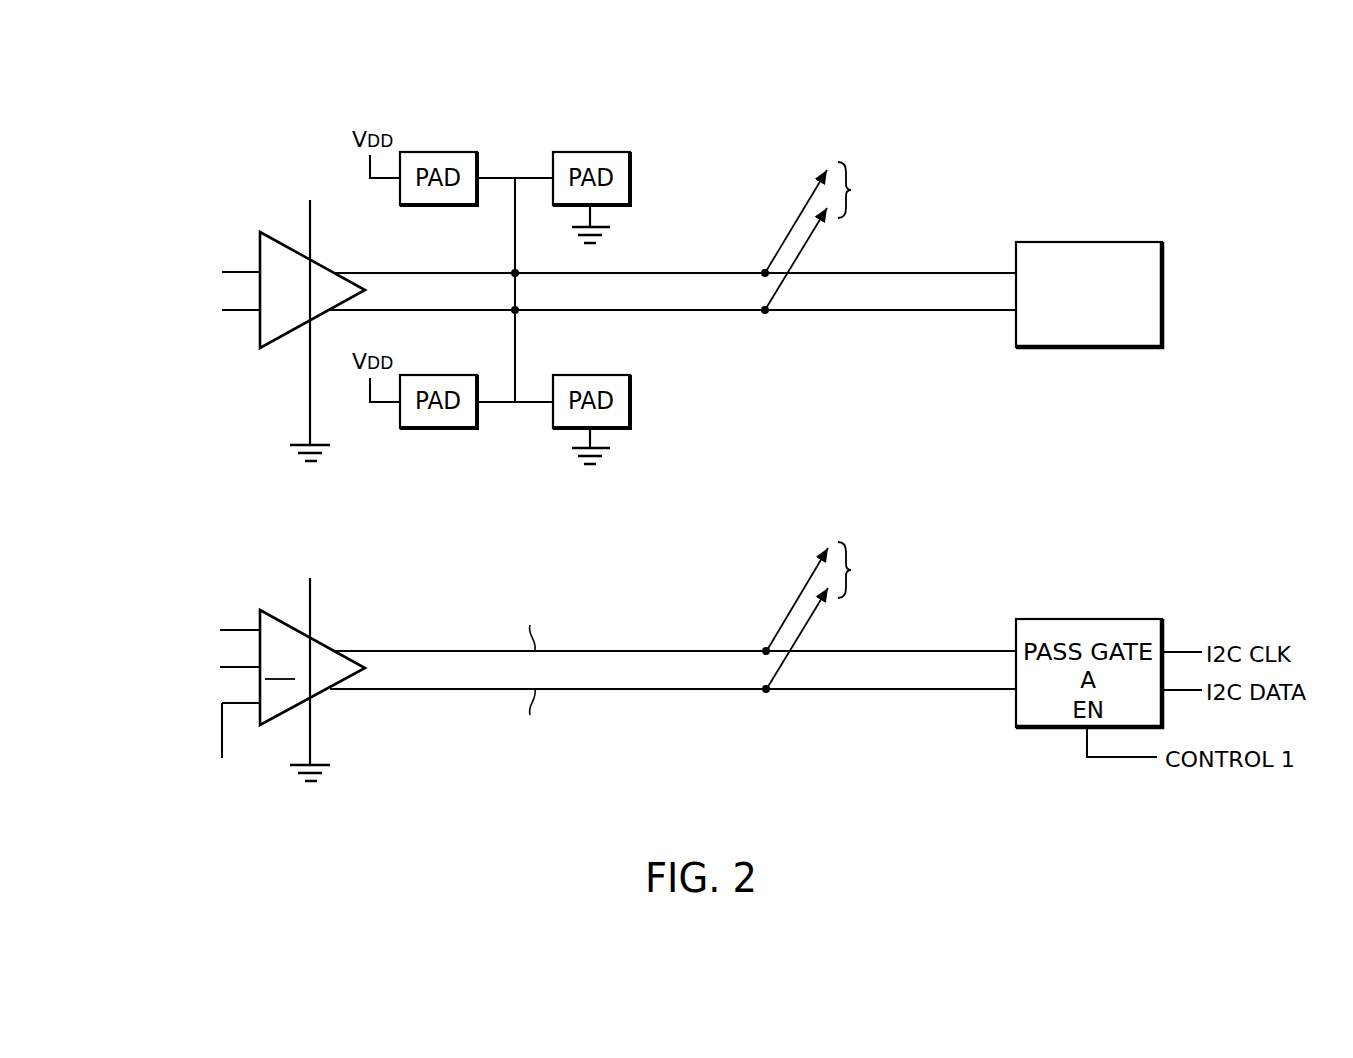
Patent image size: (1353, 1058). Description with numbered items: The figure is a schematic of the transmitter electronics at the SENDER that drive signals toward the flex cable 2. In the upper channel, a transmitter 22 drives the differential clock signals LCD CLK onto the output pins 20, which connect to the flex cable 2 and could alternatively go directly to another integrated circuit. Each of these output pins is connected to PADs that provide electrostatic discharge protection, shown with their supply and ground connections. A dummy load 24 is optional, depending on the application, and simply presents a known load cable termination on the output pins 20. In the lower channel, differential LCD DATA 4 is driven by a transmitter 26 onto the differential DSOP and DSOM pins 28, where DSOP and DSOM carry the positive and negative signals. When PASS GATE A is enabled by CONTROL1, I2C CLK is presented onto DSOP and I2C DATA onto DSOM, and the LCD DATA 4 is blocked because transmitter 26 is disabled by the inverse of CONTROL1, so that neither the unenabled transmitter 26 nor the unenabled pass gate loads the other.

The flex cable 2 is at (878, 419).
The LCD DATA 4 is at (181, 622).
The output pins 20 is at (797, 221).
The transmitter 22 is at (308, 303).
The dummy load 24 is at (1075, 337).
The transmitter 26 is at (308, 670).
The DSOP and DSOM pins 28 is at (524, 590).